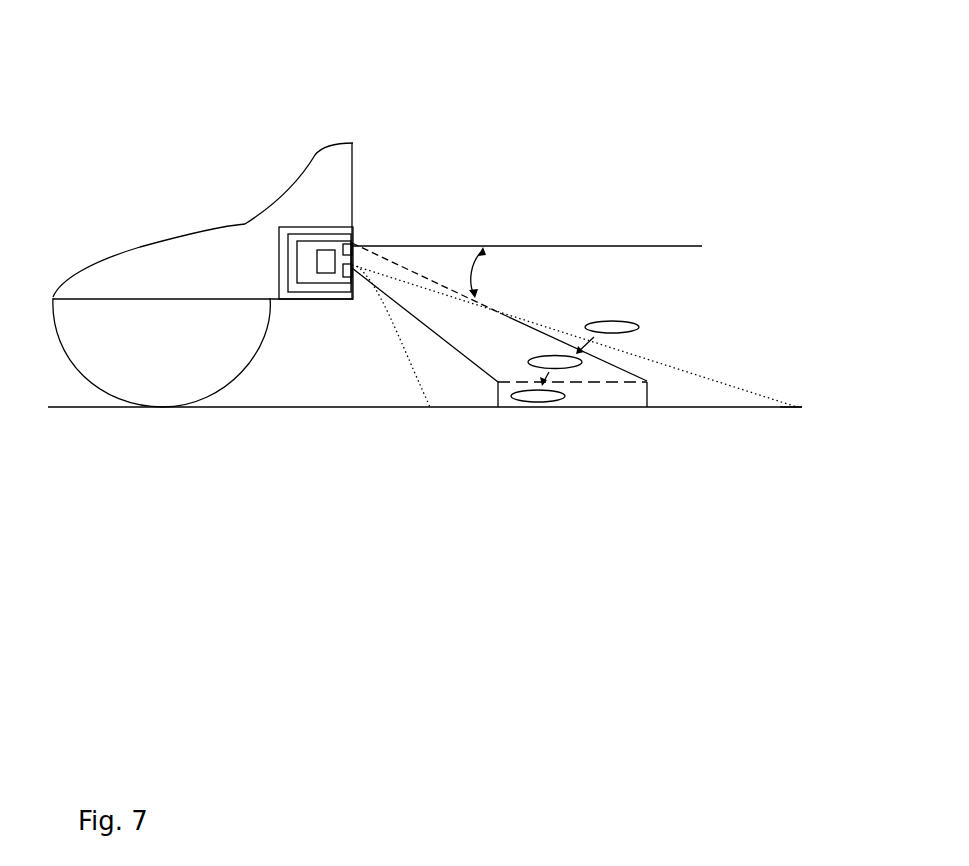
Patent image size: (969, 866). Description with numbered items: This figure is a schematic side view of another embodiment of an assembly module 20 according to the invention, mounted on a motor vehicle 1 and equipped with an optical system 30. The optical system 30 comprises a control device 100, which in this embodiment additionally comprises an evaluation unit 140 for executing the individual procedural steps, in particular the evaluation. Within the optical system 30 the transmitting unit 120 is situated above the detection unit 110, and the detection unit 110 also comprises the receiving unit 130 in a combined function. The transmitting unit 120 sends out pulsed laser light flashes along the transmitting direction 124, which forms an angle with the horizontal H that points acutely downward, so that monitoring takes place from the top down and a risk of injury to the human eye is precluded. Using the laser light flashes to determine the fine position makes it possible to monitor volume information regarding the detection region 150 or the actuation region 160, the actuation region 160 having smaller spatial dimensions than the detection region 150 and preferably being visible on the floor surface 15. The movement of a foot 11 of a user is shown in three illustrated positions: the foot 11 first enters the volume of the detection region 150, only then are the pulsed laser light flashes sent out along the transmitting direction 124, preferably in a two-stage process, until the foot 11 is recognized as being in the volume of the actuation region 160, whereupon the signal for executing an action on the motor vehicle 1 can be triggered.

The vehicle 1 is at (172, 86).
The assembly module 20 is at (318, 227).
The optical system 30 is at (302, 235).
The control device 100 is at (297, 249).
The detection unit 110 is at (353, 277).
The transmitting unit 120 is at (352, 245).
The transmitting direction 124 is at (437, 276).
The receiving unit 130 is at (356, 272).
The evaluation unit 140 is at (323, 274).
The detection region 150 is at (708, 393).
The actuation region 160 is at (492, 393).
The foot 11 is at (625, 321).
The floor surface 15 is at (798, 407).
The horizontal H is at (652, 246).